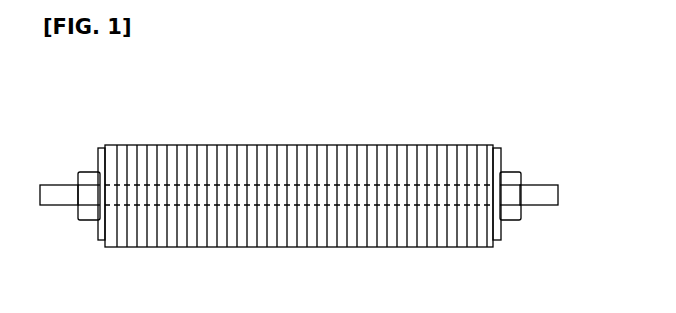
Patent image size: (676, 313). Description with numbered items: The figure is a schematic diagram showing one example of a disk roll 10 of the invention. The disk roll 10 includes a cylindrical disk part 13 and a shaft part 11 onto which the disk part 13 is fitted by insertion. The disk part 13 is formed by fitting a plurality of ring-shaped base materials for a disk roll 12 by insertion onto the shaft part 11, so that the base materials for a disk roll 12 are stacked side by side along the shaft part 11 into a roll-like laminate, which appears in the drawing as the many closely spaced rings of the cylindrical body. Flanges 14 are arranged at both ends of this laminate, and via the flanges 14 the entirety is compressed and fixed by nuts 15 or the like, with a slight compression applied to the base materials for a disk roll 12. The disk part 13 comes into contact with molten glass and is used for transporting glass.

The disk roll 10 is at (510, 106).
The shaft part 11 is at (535, 200).
The base material for a disk roll 12 is at (305, 236).
The disk part 13 is at (493, 143).
The flange 14 is at (102, 238).
The nut 15 is at (88, 173).